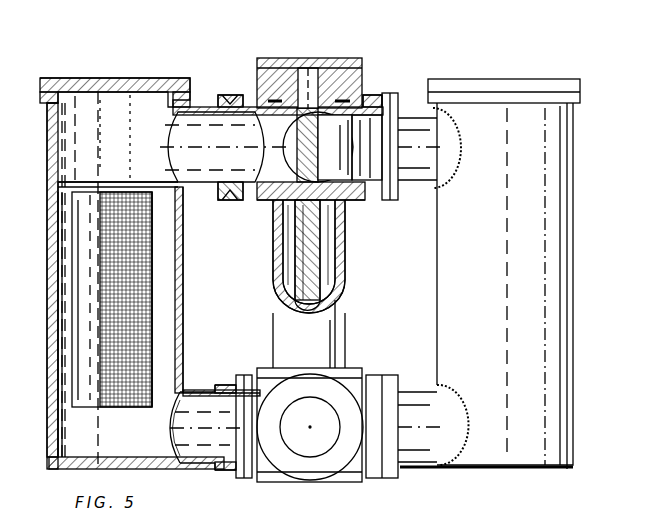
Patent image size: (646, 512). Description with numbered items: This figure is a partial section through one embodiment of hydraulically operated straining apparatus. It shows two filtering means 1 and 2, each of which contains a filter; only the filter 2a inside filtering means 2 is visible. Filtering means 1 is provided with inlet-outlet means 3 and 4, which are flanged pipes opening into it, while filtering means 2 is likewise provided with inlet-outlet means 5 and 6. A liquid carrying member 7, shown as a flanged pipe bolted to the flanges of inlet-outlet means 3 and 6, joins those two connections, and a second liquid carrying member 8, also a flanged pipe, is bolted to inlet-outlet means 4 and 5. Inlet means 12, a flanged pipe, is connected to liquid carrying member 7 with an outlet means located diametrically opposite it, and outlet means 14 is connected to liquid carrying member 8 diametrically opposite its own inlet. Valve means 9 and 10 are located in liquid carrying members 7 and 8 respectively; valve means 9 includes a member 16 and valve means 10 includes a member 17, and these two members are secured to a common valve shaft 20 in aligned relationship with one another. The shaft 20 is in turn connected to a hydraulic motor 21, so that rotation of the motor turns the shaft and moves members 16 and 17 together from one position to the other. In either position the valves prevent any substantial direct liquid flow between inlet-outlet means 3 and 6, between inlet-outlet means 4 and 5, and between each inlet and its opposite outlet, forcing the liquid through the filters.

The filtering means 1 is at (540, 252).
The filtering means 2 is at (63, 226).
The filter 2a is at (79, 276).
The inlet-outlet means 3 is at (432, 410).
The inlet-outlet means 4 is at (430, 168).
The inlet-outlet means 5 is at (190, 190).
The inlet-outlet means 6 is at (420, 80).
The liquid carrying member 7 is at (378, 388).
The liquid carrying member 8 is at (376, 198).
The valve means 9 is at (300, 447).
The valve means 10 is at (342, 142).
The inlet means 12 is at (284, 388).
The outlet means 14 is at (292, 150).
The member 16 is at (320, 446).
The member 17 is at (350, 204).
The valve shaft 20 is at (312, 278).
The hydraulic motor 21 is at (289, 57).